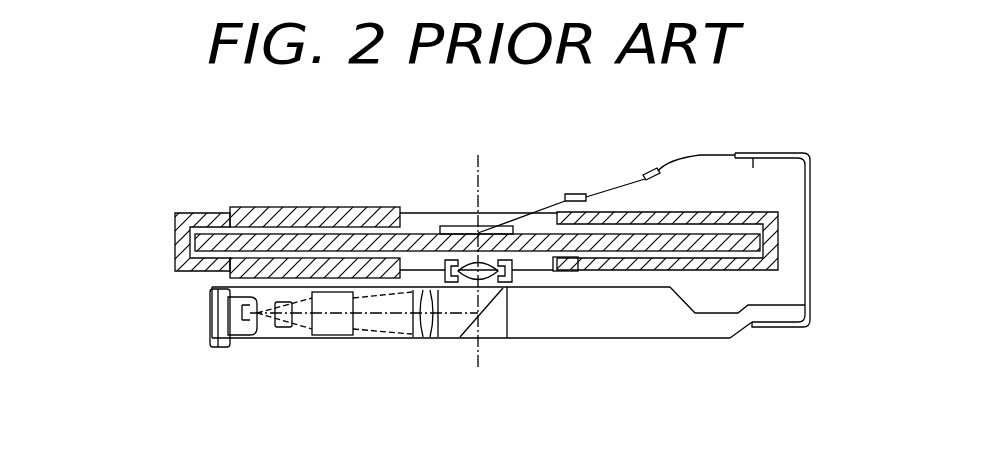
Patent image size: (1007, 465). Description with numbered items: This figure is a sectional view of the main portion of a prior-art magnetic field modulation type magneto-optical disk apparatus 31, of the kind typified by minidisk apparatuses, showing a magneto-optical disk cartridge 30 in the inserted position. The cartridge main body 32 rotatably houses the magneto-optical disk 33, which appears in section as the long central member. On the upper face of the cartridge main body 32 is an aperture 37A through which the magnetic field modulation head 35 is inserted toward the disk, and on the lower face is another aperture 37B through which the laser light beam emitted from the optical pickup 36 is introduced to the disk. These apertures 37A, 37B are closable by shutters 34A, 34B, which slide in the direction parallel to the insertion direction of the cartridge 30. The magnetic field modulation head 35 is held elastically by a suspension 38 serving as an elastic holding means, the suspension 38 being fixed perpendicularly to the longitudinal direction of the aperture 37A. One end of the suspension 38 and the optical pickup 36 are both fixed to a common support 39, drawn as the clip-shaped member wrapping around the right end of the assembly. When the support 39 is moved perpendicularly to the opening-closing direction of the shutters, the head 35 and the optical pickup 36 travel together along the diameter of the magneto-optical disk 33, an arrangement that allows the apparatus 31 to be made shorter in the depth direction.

The magneto-optical disk cartridge 30 is at (160, 232).
The magneto-optical disk apparatus 31 is at (826, 307).
The cartridge main body 32 is at (170, 213).
The magneto-optical disk 33 is at (417, 235).
The shutter 34A is at (341, 207).
The shutter 34B is at (233, 274).
The magnetic field modulation head 35 is at (499, 226).
The optical pickup 36 is at (577, 340).
The aperture 37A is at (410, 218).
The aperture 37B is at (555, 262).
The suspension 38 is at (672, 168).
The support 39 is at (812, 232).